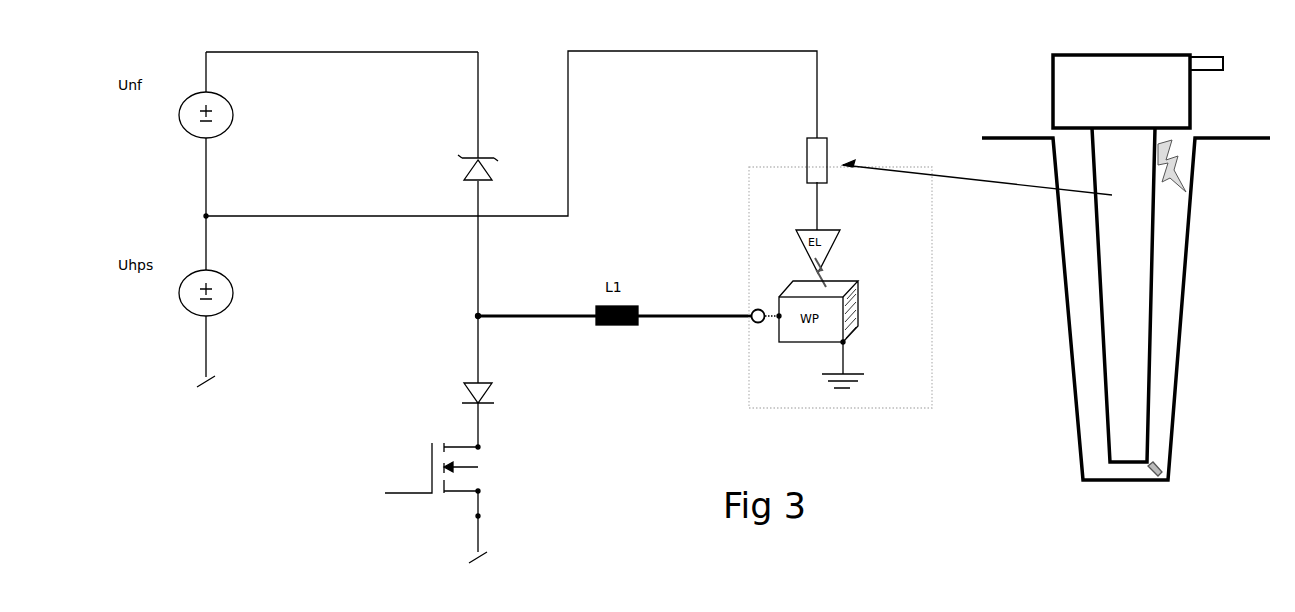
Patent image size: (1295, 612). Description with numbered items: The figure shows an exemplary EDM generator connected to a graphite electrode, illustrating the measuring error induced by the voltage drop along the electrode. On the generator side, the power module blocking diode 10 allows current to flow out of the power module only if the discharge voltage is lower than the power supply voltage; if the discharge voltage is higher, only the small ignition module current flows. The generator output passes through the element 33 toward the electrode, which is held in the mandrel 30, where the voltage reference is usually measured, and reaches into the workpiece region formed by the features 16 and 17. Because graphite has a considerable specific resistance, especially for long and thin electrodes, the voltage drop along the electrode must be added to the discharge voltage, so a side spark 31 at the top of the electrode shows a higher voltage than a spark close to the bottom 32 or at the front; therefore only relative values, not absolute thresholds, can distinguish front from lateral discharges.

The power module blocking diode 10 is at (1121, 72).
The mandrel 30 is at (1233, 61).
The side spark 31 is at (1199, 176).
The inner tube / casing 16 is at (1123, 295).
The borehole 17 is at (1240, 324).
The bottom 32 is at (1183, 473).
The resistor / load element 33 is at (959, 157).